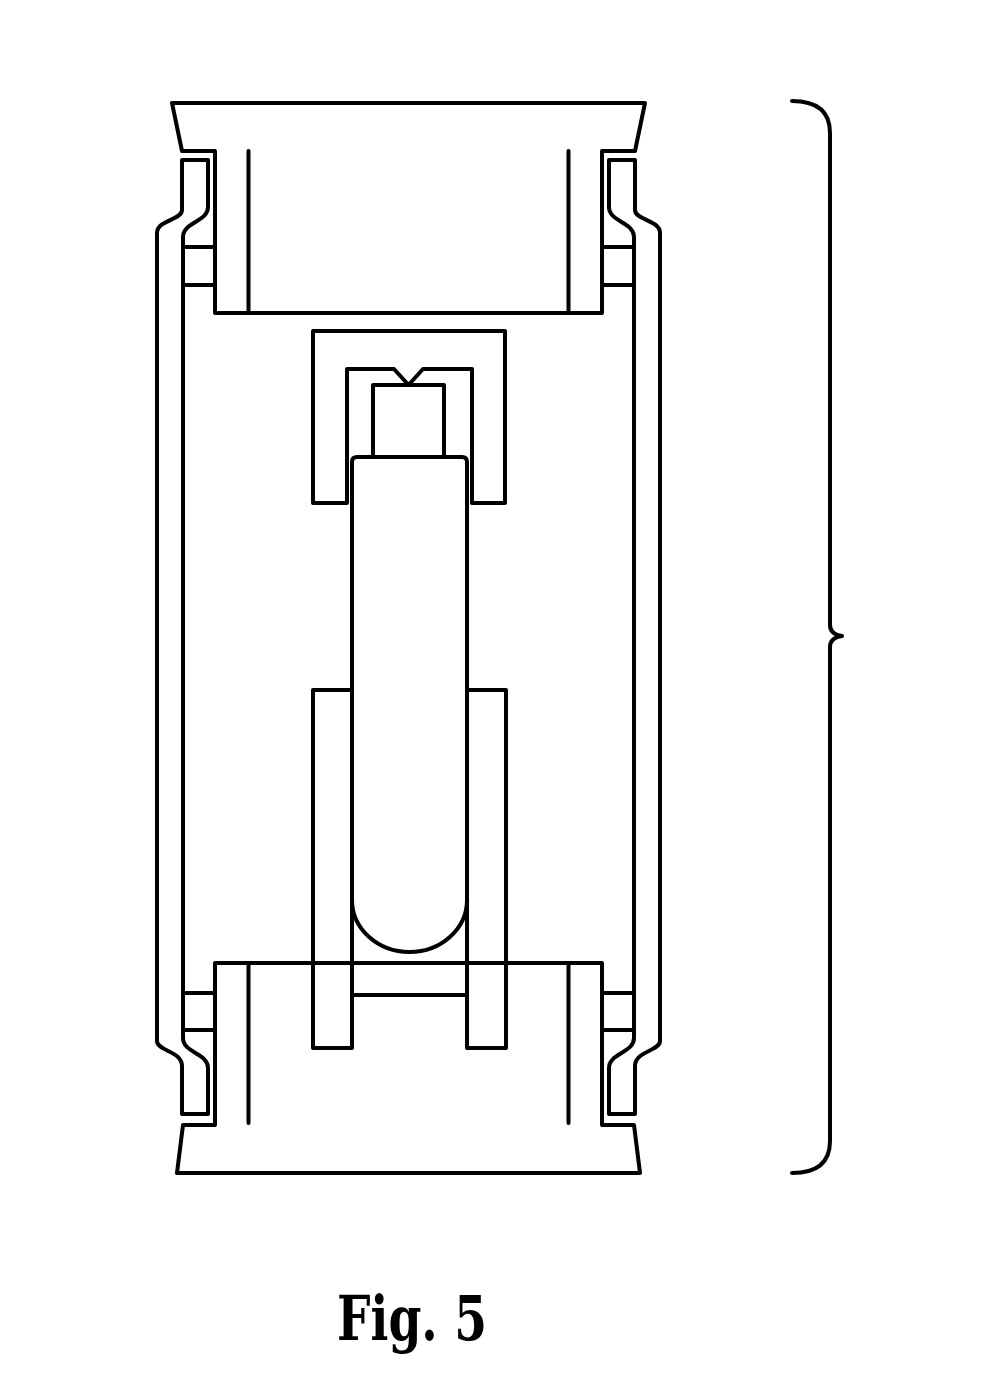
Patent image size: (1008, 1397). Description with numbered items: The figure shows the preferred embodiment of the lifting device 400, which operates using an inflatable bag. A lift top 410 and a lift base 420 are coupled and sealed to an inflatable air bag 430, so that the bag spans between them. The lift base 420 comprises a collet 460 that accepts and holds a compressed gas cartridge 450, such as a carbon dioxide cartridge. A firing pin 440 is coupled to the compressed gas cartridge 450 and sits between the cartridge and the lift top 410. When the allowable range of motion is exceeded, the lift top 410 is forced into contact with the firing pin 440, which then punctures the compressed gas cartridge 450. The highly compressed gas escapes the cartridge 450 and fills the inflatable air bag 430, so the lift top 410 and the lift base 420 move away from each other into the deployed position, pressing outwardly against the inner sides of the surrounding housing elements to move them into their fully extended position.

The sealed container assembly 400 is at (847, 637).
The lift top 410 is at (400, 133).
The lift base 420 is at (270, 1143).
The inflatable air bag 430 is at (260, 518).
The firing pin 440 is at (410, 348).
The compressed gas cartridge 450 is at (410, 743).
The collet 460 is at (433, 973).